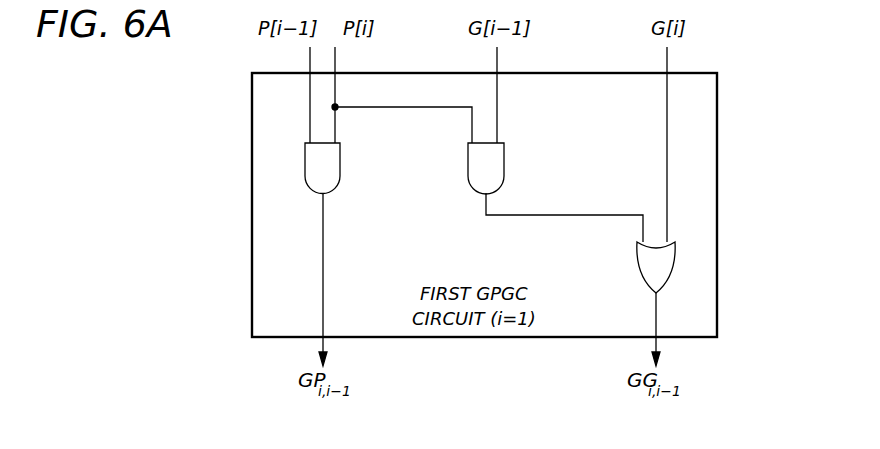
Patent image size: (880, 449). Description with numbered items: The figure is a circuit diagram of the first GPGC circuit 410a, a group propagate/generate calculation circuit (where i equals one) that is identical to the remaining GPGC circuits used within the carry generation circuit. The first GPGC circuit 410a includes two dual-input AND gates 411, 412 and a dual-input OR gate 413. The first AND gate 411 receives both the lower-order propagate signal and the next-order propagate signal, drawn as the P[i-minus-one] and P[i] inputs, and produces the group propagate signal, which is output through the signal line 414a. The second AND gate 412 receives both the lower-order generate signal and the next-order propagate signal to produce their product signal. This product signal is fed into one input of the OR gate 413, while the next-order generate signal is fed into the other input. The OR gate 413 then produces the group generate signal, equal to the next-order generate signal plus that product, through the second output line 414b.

The first GPGC circuit 410a is at (718, 180).
The first AND gate 411 is at (340, 163).
The second AND gate 412 is at (504, 160).
The OR gate 413 is at (637, 258).
The signal line 414a is at (323, 257).
The second output line 414b is at (655, 320).